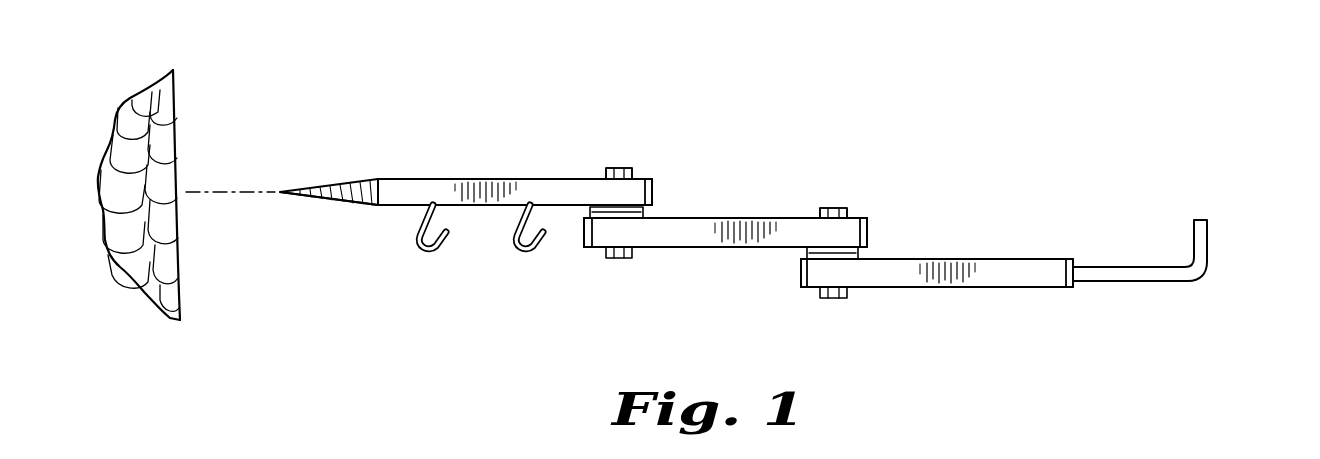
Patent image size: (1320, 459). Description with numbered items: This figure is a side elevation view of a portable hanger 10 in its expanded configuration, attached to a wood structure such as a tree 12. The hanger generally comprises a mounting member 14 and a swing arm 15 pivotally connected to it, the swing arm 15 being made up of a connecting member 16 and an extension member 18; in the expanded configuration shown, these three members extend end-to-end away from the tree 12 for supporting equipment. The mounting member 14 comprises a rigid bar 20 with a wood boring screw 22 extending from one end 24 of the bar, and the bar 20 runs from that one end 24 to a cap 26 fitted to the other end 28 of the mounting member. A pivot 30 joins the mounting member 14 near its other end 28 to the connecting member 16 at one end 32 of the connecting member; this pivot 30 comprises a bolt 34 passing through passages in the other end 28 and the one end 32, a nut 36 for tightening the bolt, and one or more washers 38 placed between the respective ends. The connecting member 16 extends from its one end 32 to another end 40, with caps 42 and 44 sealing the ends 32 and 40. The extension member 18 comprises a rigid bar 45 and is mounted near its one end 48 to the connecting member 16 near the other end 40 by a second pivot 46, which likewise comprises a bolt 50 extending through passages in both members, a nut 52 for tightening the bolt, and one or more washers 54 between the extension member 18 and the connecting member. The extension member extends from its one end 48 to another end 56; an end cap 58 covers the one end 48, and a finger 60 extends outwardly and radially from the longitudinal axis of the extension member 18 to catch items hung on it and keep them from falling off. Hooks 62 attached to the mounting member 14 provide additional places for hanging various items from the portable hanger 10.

The portable hanger 10 is at (580, 116).
The tree 12 is at (176, 93).
The mounting member 14 is at (456, 174).
The swing arm 15 is at (985, 255).
The connecting member 16 is at (748, 214).
The extension member 18 is at (944, 292).
The rigid bar 20 is at (515, 177).
The wood boring screw 22 is at (304, 189).
The one end of the bar 24 is at (376, 206).
The cap 26 is at (653, 192).
The other end of the mounting member 28 is at (647, 180).
The pivot 30 is at (602, 172).
The one end of the connecting member 32 is at (590, 249).
The bolt 34 is at (617, 166).
The nut 36 is at (620, 260).
The washers 38 is at (646, 212).
The other end of the connecting member 40 is at (863, 218).
The cap 42 is at (583, 237).
The cap 44 is at (868, 232).
The rigid bar 45 is at (1013, 290).
The pivot 46 is at (822, 204).
The one end of the extension member 48 is at (802, 289).
The bolt 50 is at (838, 206).
The nut 52 is at (832, 300).
The washers 54 is at (860, 255).
The other end of the extension member 56 is at (1075, 262).
The end cap 58 is at (799, 270).
The finger 60 is at (1208, 238).
The hooks 62 is at (514, 240).